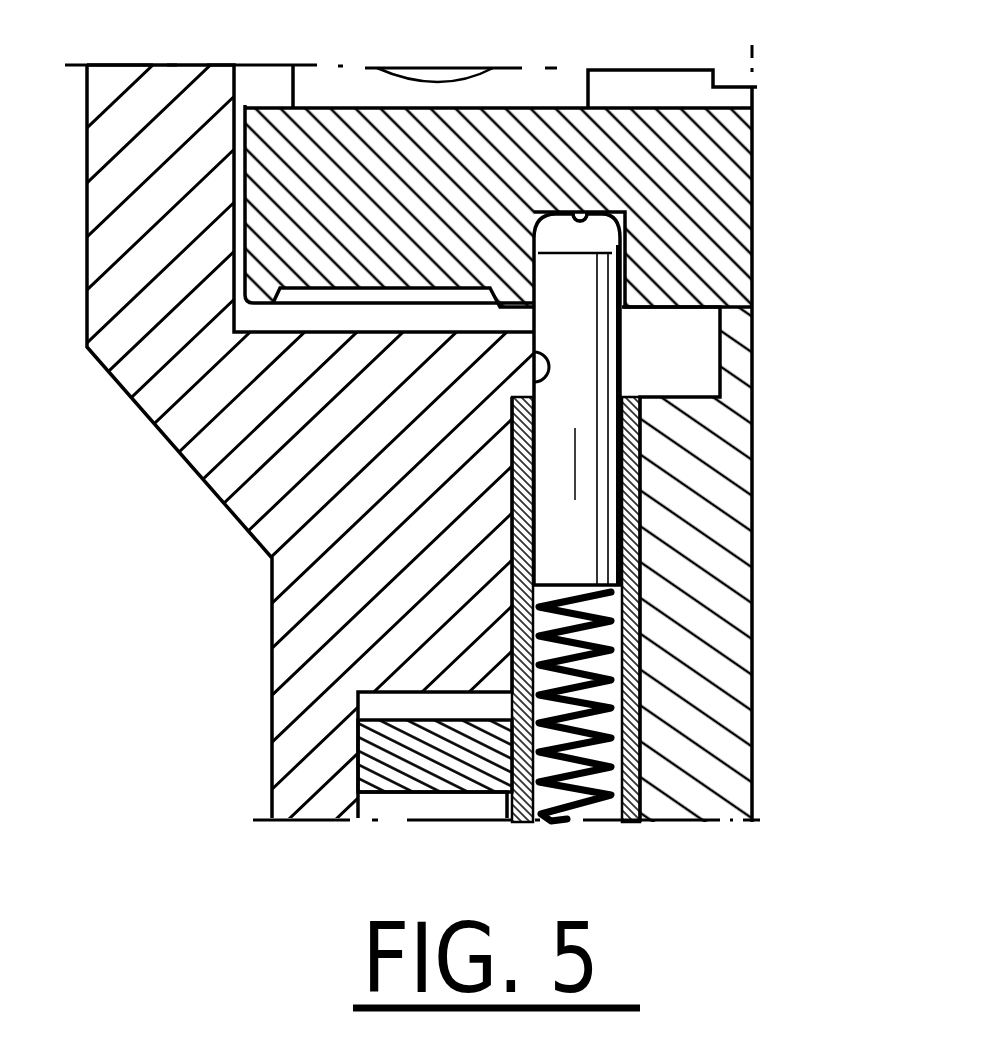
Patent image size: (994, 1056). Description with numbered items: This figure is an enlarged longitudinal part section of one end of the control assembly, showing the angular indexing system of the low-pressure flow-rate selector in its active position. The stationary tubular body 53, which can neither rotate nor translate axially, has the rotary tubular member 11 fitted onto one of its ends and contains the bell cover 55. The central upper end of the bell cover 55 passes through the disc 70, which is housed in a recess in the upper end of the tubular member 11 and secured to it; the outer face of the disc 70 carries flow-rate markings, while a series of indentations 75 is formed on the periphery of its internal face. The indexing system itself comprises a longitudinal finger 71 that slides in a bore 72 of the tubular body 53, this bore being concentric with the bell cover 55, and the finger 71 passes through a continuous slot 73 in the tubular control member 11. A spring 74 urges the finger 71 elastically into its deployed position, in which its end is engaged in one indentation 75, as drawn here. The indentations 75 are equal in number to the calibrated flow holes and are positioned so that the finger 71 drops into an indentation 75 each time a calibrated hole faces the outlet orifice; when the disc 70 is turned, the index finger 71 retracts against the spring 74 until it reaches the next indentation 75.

The tubular member 11 is at (226, 593).
The tubular body 53 is at (415, 760).
The bell cover 55 is at (692, 556).
The disc 70 is at (353, 187).
The finger 71 is at (592, 288).
The bore 72 is at (600, 455).
The continuous slot 73 is at (534, 382).
The spring 74 is at (615, 675).
The indentation 75 is at (580, 228).